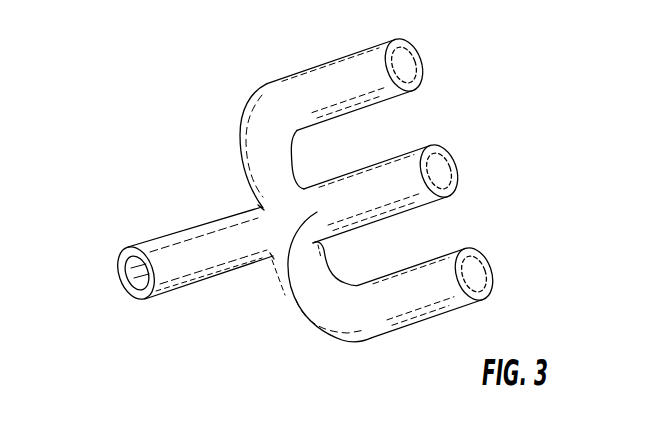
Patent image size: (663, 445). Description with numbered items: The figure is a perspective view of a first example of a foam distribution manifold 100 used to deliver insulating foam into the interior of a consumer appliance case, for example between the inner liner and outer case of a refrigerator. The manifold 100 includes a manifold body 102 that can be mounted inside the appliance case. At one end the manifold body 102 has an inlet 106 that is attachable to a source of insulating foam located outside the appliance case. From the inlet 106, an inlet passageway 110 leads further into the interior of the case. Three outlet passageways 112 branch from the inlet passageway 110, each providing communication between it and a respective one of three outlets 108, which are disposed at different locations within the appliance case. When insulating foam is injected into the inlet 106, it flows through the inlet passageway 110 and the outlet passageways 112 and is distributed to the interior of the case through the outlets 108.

The foam distribution manifold 100 is at (160, 72).
The manifold body 102 is at (197, 227).
The inlet 106 is at (126, 290).
The outlets 108 is at (421, 57).
The inlet passageway 110 is at (233, 268).
The outlet passageways 112 is at (310, 74).